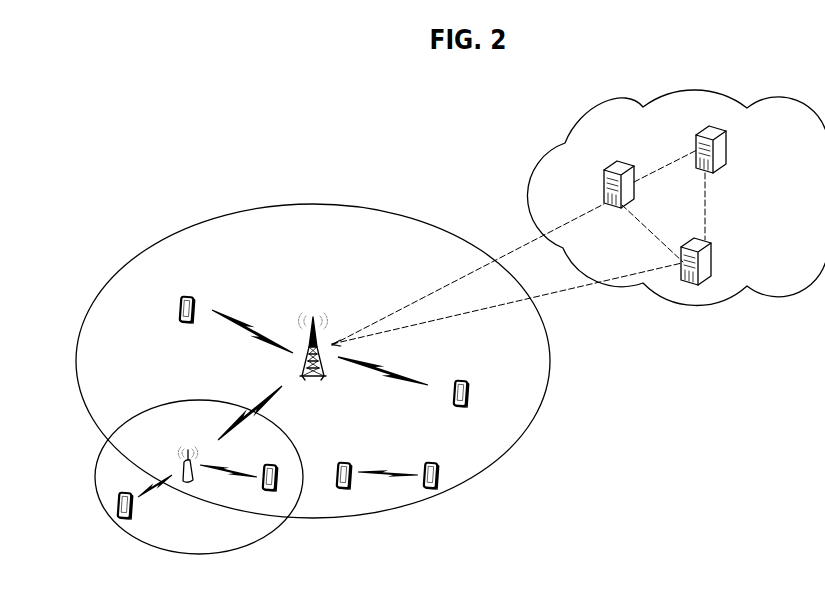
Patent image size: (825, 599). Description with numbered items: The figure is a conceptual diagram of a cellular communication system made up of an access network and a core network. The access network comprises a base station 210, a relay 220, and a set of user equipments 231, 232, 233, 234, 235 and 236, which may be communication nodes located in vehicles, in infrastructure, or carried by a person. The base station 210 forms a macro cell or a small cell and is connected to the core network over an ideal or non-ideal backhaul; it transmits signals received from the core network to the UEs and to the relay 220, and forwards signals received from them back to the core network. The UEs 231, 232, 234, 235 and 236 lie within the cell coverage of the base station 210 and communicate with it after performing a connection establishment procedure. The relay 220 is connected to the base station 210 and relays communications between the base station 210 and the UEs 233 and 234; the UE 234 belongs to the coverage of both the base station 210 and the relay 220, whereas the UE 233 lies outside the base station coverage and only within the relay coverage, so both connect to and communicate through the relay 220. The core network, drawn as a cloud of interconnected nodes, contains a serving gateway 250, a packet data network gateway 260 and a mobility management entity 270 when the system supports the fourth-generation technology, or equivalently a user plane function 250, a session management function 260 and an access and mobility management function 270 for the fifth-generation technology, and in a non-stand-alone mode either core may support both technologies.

The base station 210 is at (313, 317).
The relay 220 is at (188, 450).
The user equipment 231 is at (187, 296).
The user equipment 232 is at (459, 380).
The user equipment 233 is at (127, 521).
The user equipment 234 is at (268, 493).
The user equipment 235 is at (343, 462).
The user equipment 236 is at (430, 462).
The serving gateway 250 is at (614, 162).
The packet data network gateway 260 is at (729, 148).
The mobility management entity 270 is at (713, 260).